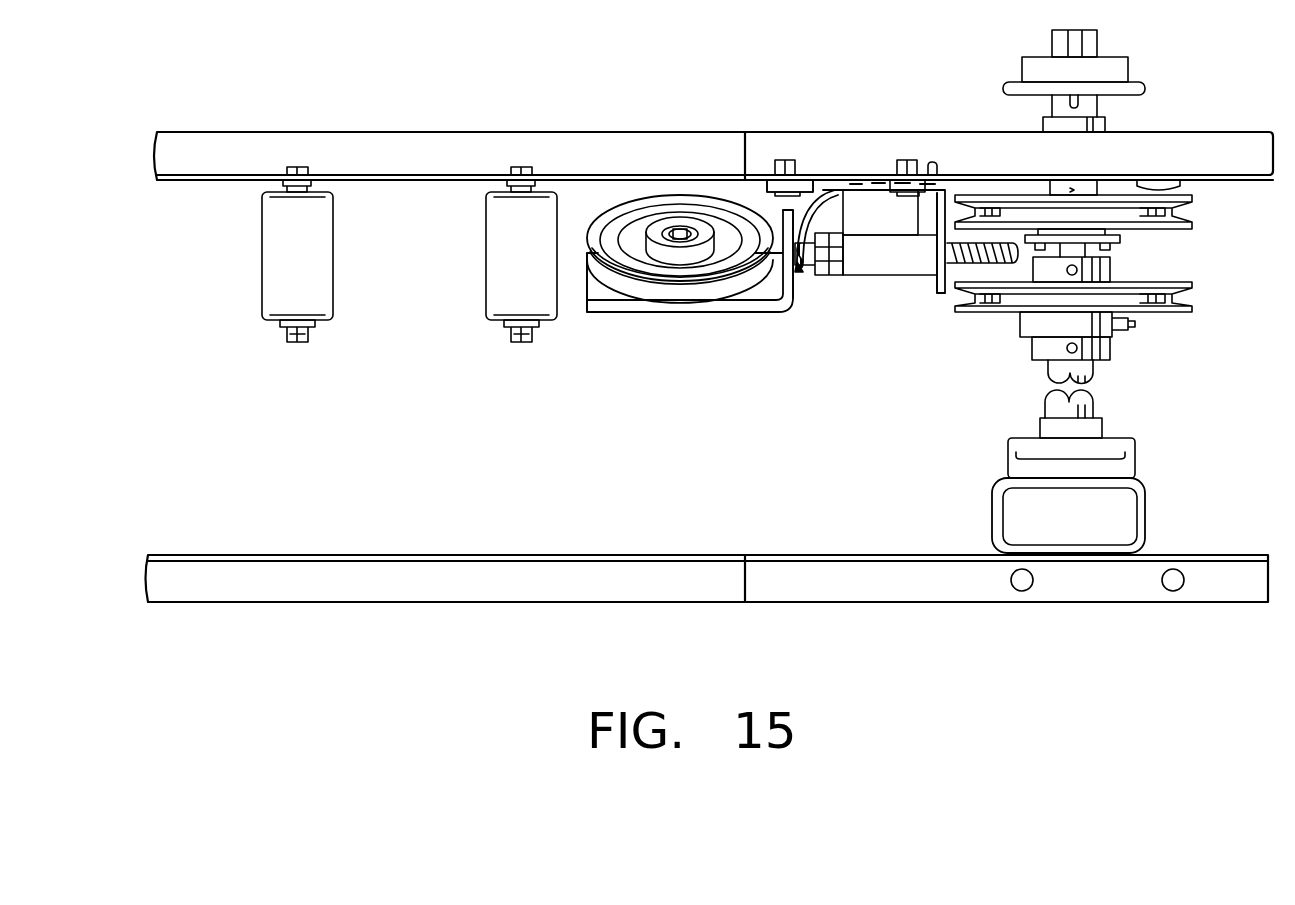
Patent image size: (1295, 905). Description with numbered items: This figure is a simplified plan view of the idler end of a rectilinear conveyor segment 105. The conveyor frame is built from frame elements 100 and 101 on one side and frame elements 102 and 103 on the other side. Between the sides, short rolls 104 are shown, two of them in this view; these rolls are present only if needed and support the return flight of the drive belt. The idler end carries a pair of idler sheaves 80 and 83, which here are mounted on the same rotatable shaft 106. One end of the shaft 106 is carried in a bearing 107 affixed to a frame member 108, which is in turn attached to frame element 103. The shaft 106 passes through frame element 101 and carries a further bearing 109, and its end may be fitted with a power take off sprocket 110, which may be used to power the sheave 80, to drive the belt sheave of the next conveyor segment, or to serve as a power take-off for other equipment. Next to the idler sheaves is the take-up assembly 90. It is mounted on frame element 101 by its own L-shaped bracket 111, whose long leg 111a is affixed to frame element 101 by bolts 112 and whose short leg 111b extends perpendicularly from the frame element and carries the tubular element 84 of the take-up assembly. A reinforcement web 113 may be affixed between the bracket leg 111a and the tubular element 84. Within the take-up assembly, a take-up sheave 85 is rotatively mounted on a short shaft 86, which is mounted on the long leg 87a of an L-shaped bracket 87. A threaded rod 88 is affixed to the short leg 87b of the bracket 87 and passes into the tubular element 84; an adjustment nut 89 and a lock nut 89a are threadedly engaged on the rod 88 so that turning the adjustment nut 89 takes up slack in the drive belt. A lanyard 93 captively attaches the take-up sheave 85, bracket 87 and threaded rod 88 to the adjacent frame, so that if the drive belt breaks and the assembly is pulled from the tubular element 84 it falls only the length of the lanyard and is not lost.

The idler sheave 80 is at (1192, 210).
The idler sheave 83 is at (1192, 298).
The tubular element 84 is at (920, 262).
The take-up sheave 85 is at (603, 282).
The short shaft 86 is at (680, 238).
The L-shaped bracket 87 is at (735, 310).
The long leg of bracket 87a is at (600, 312).
The short leg of bracket 87b is at (797, 300).
The threaded rod 88 is at (1010, 265).
The adjustment nut 89 is at (843, 258).
The lock nut 89a is at (800, 285).
The take-up assembly 90 is at (838, 290).
The lanyard 93 is at (815, 205).
The frame element 100 is at (272, 143).
The frame element 101 is at (975, 138).
The frame element 102 is at (238, 602).
The frame element 103 is at (1093, 602).
The short rolls 104 is at (263, 260).
The rectilinear conveyor segment 105 is at (570, 100).
The rotatable shaft 106 is at (1095, 410).
The bearing 107 is at (1090, 428).
The frame member 108 is at (1147, 512).
The bearing 109 is at (1105, 125).
The power take off sprocket 110 is at (1130, 85).
The bracket 111 is at (955, 187).
The long leg of bracket 111a is at (770, 185).
The short leg of bracket 111b is at (938, 295).
The bolts 112 is at (783, 160).
The reinforcement web 113 is at (908, 237).